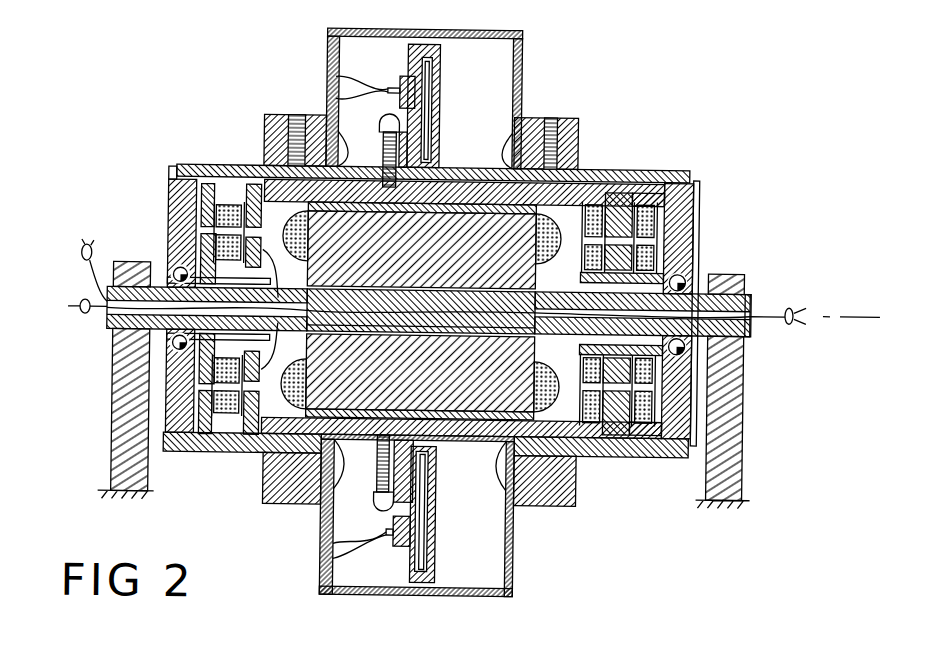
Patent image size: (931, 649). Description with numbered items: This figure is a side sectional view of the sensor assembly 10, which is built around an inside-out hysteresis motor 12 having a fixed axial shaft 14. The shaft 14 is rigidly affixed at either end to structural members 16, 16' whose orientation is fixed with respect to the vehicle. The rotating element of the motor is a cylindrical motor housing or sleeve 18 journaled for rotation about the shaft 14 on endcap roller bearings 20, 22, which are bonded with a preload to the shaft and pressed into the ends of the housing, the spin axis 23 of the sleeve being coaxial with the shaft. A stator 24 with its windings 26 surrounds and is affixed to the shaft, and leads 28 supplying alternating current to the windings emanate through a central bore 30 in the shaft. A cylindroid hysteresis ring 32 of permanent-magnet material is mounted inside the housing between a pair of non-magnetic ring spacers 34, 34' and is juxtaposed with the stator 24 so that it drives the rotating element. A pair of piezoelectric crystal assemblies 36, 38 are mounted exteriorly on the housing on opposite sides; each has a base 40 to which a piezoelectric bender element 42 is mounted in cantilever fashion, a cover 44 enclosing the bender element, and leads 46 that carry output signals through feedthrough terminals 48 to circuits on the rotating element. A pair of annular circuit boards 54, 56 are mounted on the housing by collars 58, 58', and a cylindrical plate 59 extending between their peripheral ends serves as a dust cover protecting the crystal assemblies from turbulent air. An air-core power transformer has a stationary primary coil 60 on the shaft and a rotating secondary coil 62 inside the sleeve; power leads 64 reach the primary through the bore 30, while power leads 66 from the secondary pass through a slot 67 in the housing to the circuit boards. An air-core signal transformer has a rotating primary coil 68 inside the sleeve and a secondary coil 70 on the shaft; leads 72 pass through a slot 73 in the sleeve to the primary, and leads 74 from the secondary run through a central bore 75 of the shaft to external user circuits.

The sensor assembly 10 is at (570, 59).
The hysteresis motor 12 is at (615, 165).
The fixed axial shaft 14 is at (752, 294).
The structural member 16 is at (742, 391).
The structural member 16' is at (108, 380).
The motor housing or sleeve 18 is at (688, 167).
The bearing 20 is at (698, 195).
The bearing 22 is at (167, 198).
The spin axis 23 is at (845, 308).
The stator 24 is at (430, 383).
The stator windings 26 is at (557, 207).
The leads 28 is at (82, 304).
The central bore 30 is at (107, 320).
The hysteresis ring 32 is at (477, 182).
The ring spacer 34 is at (600, 473).
The ring spacer 34' is at (242, 462).
The piezoelectric crystal assembly 36 is at (424, 46).
The piezoelectric crystal assembly 38 is at (440, 575).
The base 40 is at (374, 444).
The piezoelectric bender element 42 is at (430, 505).
The cover 44 is at (434, 550).
The leads 46 is at (367, 541).
The feedthrough terminals 48 is at (393, 547).
The annular circuit board 54 is at (321, 53).
The annular circuit board 56 is at (519, 71).
The collar 58 is at (560, 125).
The collar 58' is at (274, 123).
The cylindrical plate 59 is at (493, 597).
The primary coil 60 is at (200, 252).
The secondary coil 62 is at (200, 222).
The power leads 64 is at (82, 254).
The power leads 66 is at (228, 212).
The slot 67 is at (167, 181).
The primary coil 68 is at (686, 201).
The secondary coil 70 is at (659, 273).
The leads 72 is at (620, 183).
The slot 73 is at (663, 181).
The leads 74 is at (793, 316).
The central bore 75 is at (752, 322).